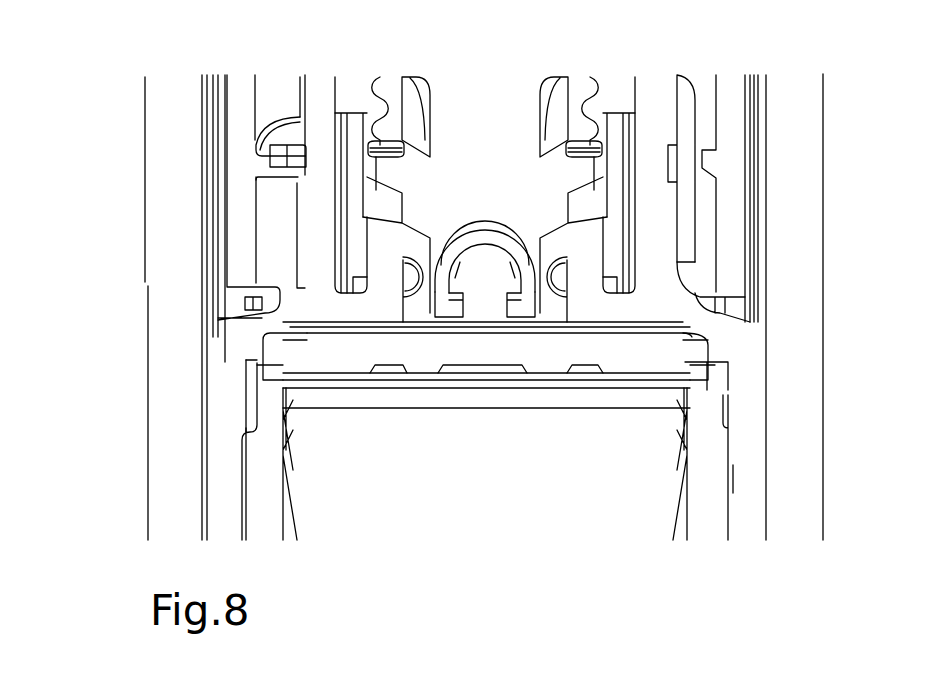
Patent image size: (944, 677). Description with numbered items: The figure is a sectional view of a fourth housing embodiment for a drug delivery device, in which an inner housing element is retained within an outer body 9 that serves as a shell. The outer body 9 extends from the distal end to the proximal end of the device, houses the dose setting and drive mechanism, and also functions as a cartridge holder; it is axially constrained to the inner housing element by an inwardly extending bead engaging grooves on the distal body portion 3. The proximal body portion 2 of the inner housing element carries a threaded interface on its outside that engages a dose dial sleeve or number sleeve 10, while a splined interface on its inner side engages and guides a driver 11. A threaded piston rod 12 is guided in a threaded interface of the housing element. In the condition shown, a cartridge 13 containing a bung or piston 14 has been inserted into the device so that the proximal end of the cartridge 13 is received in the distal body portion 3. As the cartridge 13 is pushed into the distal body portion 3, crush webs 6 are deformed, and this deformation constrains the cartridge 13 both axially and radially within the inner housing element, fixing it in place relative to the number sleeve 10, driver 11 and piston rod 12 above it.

The proximal body portion 2 is at (308, 110).
The distal body portion 3 is at (203, 360).
The crush webs 6 is at (242, 404).
The outer body 9 is at (170, 196).
The number sleeve 10 is at (237, 142).
The driver 11 is at (353, 137).
The threaded piston rod 12 is at (469, 105).
The cartridge 13 is at (257, 517).
The piston 14 is at (673, 492).